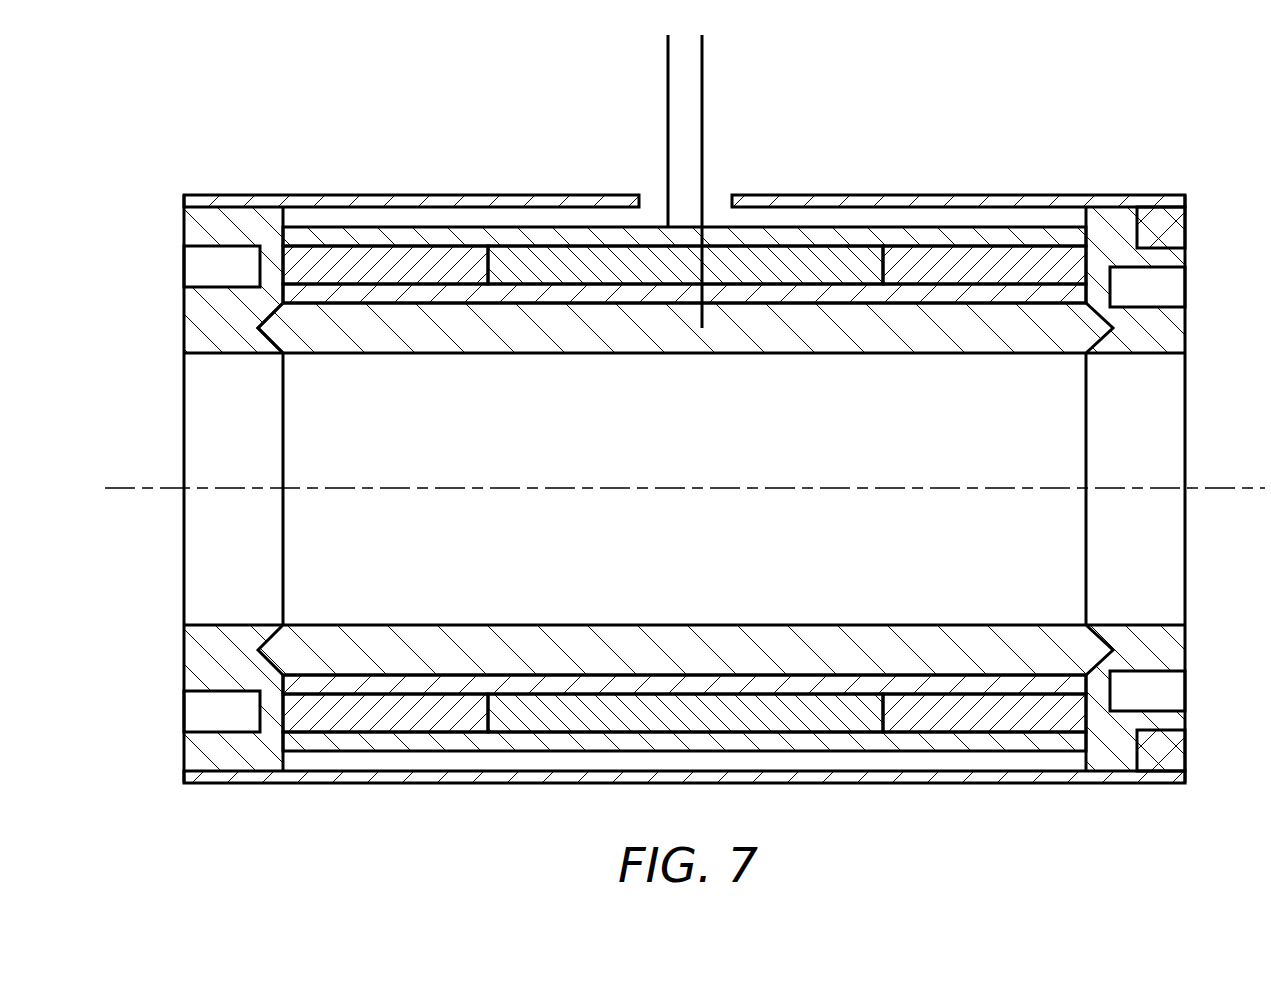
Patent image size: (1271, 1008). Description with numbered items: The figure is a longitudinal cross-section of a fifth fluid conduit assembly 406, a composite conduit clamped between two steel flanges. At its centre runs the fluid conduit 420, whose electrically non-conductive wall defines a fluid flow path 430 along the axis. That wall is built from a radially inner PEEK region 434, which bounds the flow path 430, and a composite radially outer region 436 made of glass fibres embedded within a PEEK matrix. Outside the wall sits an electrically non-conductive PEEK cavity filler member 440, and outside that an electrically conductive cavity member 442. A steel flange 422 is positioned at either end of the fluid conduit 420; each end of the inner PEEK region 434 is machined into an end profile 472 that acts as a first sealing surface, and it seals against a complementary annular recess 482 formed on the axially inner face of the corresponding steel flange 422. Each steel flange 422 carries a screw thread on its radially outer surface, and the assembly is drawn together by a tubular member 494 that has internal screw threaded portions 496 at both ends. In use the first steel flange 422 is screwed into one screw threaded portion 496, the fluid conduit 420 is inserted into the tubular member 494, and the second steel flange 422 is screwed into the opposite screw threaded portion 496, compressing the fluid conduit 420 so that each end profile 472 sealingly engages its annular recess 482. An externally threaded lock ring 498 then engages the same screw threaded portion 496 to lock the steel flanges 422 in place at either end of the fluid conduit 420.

The fifth fluid conduit assembly 406 is at (418, 818).
The fluid conduit 420 is at (452, 385).
The steel flange 422 is at (197, 318).
The fluid flow path 430 is at (707, 433).
The radially inner PEEK region 434 is at (1021, 333).
The composite radially outer region 436 is at (990, 297).
The cavity filler member 440 is at (762, 258).
The electrically conductive cavity member 442 is at (907, 257).
The end profile 472 is at (235, 363).
The annular recess 482 is at (278, 355).
The tubular member 494 is at (470, 205).
The screw threaded portion 496 is at (285, 177).
The lock ring 498 is at (1178, 228).